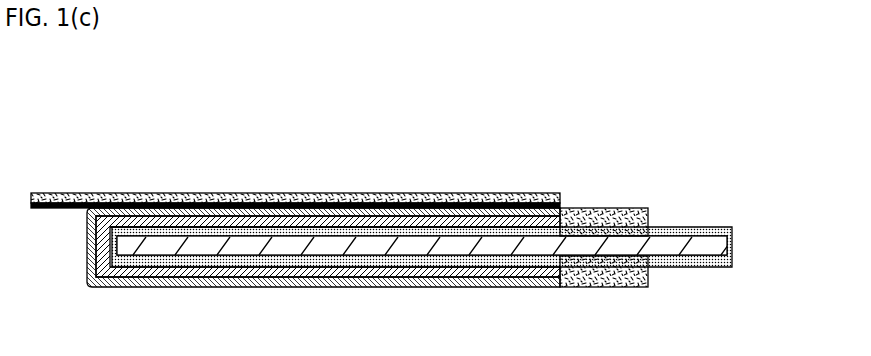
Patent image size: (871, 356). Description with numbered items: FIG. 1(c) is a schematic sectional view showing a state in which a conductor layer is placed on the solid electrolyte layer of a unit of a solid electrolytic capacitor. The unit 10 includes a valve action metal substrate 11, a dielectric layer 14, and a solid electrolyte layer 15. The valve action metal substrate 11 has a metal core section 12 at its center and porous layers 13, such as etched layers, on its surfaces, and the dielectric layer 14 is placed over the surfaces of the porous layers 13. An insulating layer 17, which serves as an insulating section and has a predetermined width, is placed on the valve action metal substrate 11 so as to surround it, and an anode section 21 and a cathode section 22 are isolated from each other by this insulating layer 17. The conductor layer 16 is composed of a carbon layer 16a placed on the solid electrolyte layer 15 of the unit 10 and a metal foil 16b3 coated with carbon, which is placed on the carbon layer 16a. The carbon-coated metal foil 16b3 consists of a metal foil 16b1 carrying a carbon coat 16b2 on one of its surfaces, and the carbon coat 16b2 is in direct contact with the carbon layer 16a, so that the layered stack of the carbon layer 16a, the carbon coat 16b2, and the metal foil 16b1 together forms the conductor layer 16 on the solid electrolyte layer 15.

The unit 10 is at (432, 208).
The valve action metal substrate 11 is at (472, 250).
The metal core section 12 is at (712, 257).
The porous layers 13 is at (732, 233).
The dielectric layer 14 is at (492, 228).
The solid electrolyte layer 15 is at (345, 223).
The conductor layer 16 is at (295, 174).
The carbon layer 16a is at (222, 213).
The metal foil 16b1 is at (79, 200).
The carbon coat 16b2 is at (40, 142).
The metal foil coated with carbon 16b3 is at (295, 156).
The insulating layer 17 is at (578, 222).
The anode section 21 is at (690, 280).
The cathode section 22 is at (135, 293).